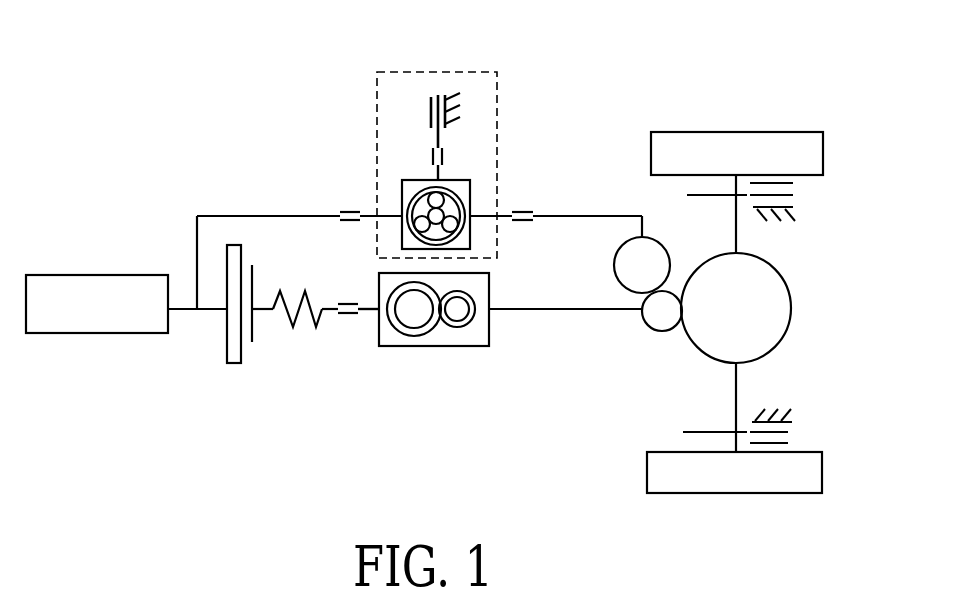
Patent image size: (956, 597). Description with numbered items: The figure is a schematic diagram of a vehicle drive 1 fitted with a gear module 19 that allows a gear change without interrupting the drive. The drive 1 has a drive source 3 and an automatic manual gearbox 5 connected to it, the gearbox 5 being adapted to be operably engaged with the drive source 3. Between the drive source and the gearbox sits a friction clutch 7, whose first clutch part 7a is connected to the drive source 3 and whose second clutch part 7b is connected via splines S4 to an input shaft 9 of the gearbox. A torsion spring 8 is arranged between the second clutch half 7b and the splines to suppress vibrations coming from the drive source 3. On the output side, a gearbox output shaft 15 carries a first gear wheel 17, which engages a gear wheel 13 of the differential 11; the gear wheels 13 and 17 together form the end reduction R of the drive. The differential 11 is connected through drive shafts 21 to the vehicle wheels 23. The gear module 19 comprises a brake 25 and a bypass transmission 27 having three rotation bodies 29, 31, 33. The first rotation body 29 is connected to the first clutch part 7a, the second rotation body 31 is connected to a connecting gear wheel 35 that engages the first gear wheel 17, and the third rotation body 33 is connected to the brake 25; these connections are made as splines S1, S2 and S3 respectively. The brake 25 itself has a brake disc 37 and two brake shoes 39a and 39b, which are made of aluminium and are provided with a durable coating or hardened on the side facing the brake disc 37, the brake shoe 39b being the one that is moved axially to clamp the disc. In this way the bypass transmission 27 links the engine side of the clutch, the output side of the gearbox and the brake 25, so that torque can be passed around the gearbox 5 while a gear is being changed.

The drive 1 is at (175, 94).
The drive source 3 is at (60, 262).
The automatic manual gearbox 5 is at (433, 360).
The friction clutch 7 is at (242, 360).
The first clutch part 7a is at (232, 350).
The second clutch part 7b is at (252, 342).
The torsion spring 8 is at (296, 350).
The input shaft 9 is at (369, 309).
The differential 11 is at (805, 313).
The gear wheel 13 is at (702, 340).
The gearbox output shaft 15 is at (508, 309).
The first gear wheel 17 is at (653, 326).
The gear module 19 is at (498, 60).
The drive shafts 21 is at (738, 233).
The vehicle wheels 23 is at (812, 153).
The brake 25 is at (474, 91).
The bypass transmission 27 is at (484, 259).
The first rotation body 29 is at (385, 218).
The second rotation body 31 is at (485, 218).
The third rotation body 33 is at (441, 177).
The connecting gear wheel 35 is at (653, 253).
The brake disc 37 is at (442, 95).
The brake shoe 39a is at (450, 102).
The brake shoe 39b is at (429, 100).
The splines S1 is at (351, 194).
The splines S2 is at (523, 194).
The splines S3 is at (416, 138).
The splines S4 is at (349, 334).
The end reduction R is at (666, 341).